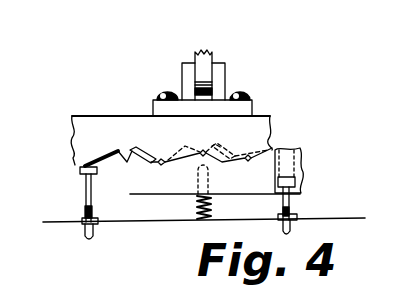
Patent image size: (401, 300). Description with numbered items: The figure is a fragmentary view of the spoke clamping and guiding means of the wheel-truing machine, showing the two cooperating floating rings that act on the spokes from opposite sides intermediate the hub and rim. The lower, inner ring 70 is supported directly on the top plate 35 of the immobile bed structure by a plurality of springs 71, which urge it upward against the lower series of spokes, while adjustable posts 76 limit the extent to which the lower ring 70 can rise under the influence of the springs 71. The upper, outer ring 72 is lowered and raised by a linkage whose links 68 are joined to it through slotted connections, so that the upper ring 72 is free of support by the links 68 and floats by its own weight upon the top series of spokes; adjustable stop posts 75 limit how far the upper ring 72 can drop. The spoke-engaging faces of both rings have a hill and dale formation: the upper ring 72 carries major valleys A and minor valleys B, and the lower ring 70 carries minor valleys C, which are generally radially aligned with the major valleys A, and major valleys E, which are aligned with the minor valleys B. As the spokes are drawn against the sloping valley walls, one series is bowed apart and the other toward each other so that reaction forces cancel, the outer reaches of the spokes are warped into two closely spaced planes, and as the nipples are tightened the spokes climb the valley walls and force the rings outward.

The top plate 35 is at (63, 219).
The links 68 is at (212, 56).
The lower ring 70 is at (158, 195).
The springs 71 is at (212, 208).
The upper ring 72 is at (109, 117).
The adjustable stop posts 75 is at (83, 188).
The adjustable posts 76 is at (297, 205).
The major valleys A is at (107, 163).
The minor valleys B is at (131, 163).
The minor valleys C is at (207, 151).
The major valleys E is at (147, 152).